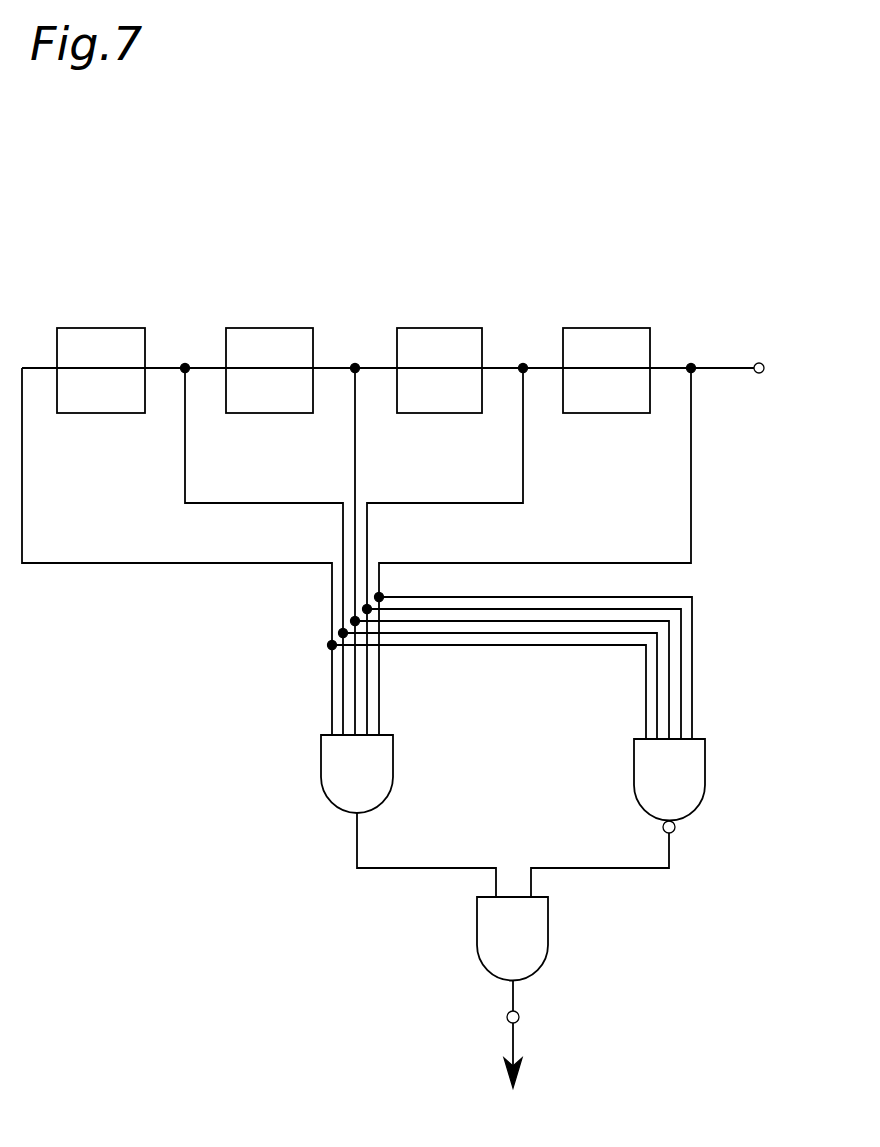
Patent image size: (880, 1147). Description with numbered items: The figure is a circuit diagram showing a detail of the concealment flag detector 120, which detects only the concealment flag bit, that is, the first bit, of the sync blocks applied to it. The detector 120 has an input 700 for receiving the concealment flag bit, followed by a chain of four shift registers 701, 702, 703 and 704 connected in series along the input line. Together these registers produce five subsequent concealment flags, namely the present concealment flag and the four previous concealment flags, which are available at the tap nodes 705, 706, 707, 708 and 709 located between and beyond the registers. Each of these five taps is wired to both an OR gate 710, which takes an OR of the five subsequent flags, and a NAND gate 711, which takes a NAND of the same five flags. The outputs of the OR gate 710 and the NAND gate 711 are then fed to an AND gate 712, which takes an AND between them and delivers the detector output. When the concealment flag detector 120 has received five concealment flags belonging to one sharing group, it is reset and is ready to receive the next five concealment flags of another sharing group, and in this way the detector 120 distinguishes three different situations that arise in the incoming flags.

The concealment flag detector 120 is at (382, 215).
The input terminal 700 is at (762, 343).
The shift register 701 is at (605, 328).
The shift register 702 is at (438, 328).
The shift register 703 is at (268, 328).
The shift register 704 is at (100, 328).
The tap node 705 is at (691, 368).
The tap node 706 is at (523, 368).
The tap node 707 is at (355, 368).
The tap node 708 is at (185, 368).
The tap node 709 is at (22, 368).
The OR gate 710 is at (321, 766).
The NAND gate 711 is at (705, 762).
The AND gate 712 is at (520, 1015).